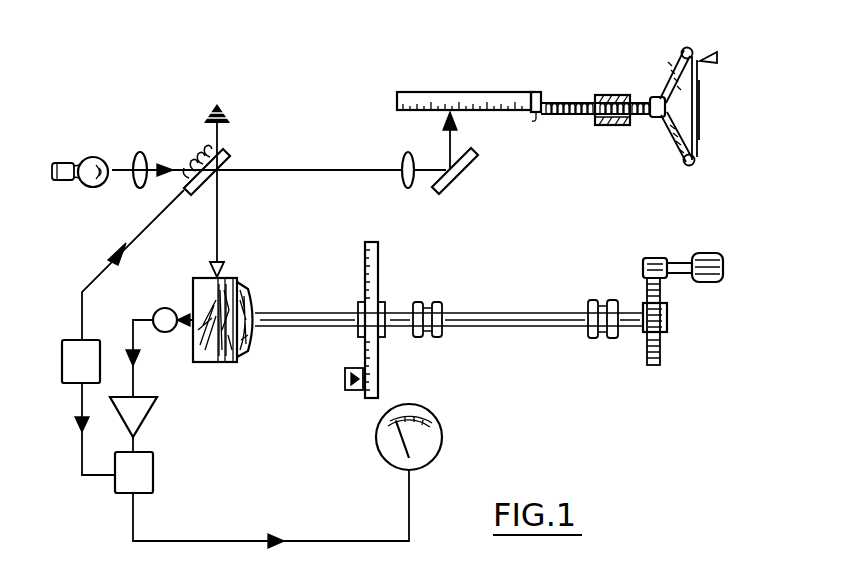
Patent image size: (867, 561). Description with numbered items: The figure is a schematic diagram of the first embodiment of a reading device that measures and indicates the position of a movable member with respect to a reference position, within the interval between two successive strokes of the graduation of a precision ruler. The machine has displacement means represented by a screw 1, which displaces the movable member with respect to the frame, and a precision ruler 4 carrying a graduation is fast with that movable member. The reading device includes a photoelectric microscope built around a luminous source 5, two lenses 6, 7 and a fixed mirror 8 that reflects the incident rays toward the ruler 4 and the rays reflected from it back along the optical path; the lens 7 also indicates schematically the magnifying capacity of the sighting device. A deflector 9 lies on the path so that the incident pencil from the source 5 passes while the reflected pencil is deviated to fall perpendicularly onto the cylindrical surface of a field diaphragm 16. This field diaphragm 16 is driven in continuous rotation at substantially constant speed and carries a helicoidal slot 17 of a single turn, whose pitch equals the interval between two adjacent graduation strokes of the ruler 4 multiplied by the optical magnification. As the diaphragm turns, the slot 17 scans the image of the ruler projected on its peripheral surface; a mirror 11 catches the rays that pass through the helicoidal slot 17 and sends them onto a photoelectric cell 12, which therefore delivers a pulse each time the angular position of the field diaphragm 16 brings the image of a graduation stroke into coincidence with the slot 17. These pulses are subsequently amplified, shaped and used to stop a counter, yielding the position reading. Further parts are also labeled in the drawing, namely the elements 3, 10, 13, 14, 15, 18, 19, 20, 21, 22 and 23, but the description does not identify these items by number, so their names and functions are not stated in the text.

The screw 1 is at (553, 101).
The slide carrier 3 is at (534, 122).
The precision ruler 4 is at (470, 92).
The luminous source 5 is at (93, 157).
The lens 6 is at (142, 153).
The lens 7 is at (402, 158).
The fixed mirror 8 is at (460, 175).
The deflector 9 is at (232, 156).
The oscillator 10 is at (88, 407).
The mirror 11 is at (232, 280).
The photoelectric cell 12 is at (165, 308).
The amplifier 13 is at (146, 410).
The phase comparator 14 is at (262, 500).
The indicating meter 15 is at (440, 433).
The field diaphragm 16 is at (229, 362).
The helicoidal slot 17 is at (215, 362).
The housing cap 18 is at (250, 298).
The drive shaft 19 is at (345, 328).
The graduated disc 20 is at (380, 274).
The worm gear 21 is at (647, 355).
The worm 22 is at (653, 258).
The drive motor 23 is at (704, 253).